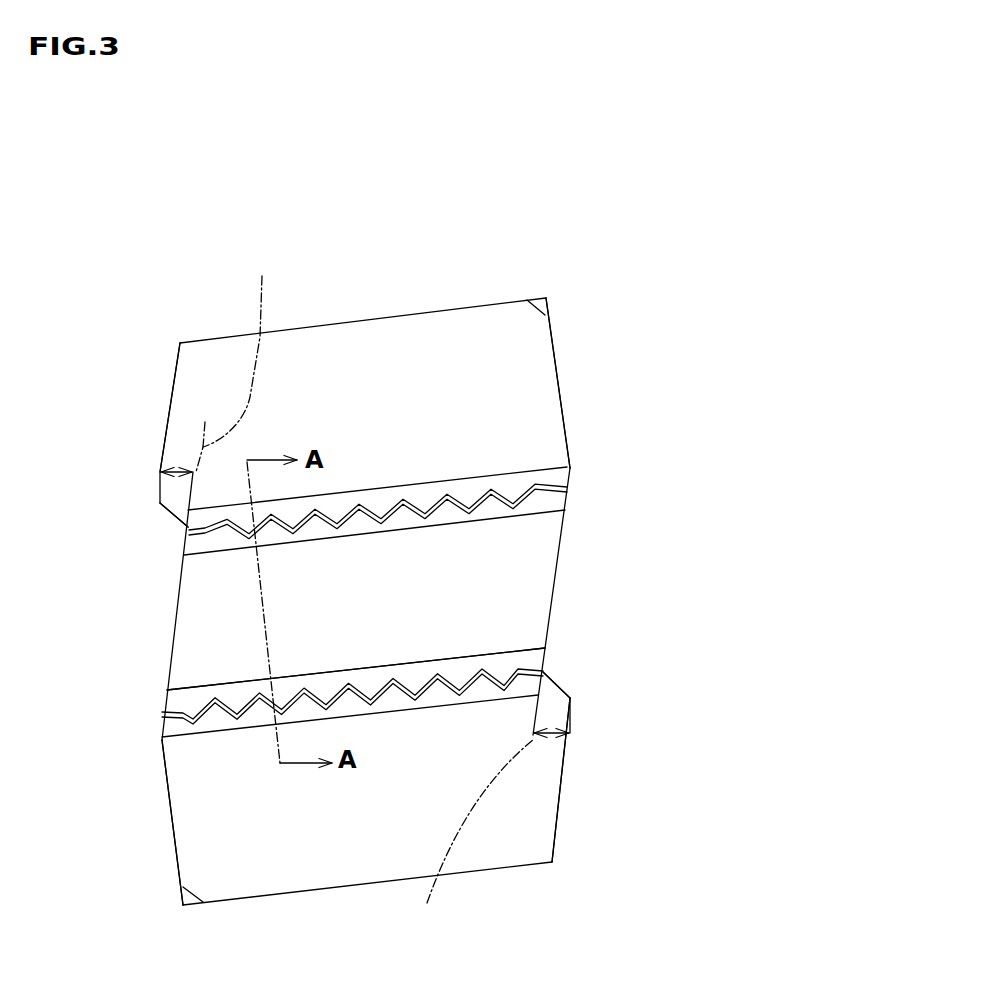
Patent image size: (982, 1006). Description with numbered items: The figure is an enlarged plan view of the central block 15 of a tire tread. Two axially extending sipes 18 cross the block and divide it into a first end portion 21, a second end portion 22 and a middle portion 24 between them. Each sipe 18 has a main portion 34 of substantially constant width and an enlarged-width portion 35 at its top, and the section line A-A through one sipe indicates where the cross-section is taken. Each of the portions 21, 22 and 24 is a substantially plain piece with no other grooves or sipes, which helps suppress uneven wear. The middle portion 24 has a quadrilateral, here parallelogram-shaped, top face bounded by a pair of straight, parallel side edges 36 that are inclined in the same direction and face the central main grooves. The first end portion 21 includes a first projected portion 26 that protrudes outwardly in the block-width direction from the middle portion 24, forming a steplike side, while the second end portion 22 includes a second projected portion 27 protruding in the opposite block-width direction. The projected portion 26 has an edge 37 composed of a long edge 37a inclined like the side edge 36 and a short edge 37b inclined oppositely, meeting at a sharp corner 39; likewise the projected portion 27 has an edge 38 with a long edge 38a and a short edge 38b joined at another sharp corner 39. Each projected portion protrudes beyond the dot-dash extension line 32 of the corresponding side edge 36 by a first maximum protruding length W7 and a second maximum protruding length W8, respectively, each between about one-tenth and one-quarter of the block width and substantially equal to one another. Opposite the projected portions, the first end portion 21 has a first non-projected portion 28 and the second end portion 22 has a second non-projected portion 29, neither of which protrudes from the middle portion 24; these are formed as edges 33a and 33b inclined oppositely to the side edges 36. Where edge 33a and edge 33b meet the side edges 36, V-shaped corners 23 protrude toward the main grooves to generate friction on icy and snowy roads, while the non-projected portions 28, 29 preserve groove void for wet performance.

The central block 15 is at (715, 383).
The sipe 18 is at (334, 506).
The first end portion 21 is at (420, 423).
The second end portion 22 is at (417, 777).
The corner 23 is at (570, 485).
The middle portion 24 is at (420, 603).
The first projected portion 26 is at (188, 422).
The second projected portion 27 is at (543, 787).
The first non-projected portion 28 is at (557, 362).
The second non-projected portion 29 is at (170, 868).
The extension line 32 is at (364, 593).
The edge 33a is at (567, 432).
The edge 33b is at (170, 813).
The main portion 34 is at (234, 706).
The enlarged-width portion 35 is at (178, 725).
The side edge 36 is at (172, 605).
The edge 37 is at (97, 448).
The long edge 37a is at (166, 418).
The short edge 37b is at (183, 522).
The edge 38 is at (665, 728).
The long edge 38a is at (558, 805).
The short edge 38b is at (557, 688).
The sharp corner 39 is at (163, 503).
The first maximum protruding length W7 is at (170, 468).
The second maximum protruding length W8 is at (557, 733).